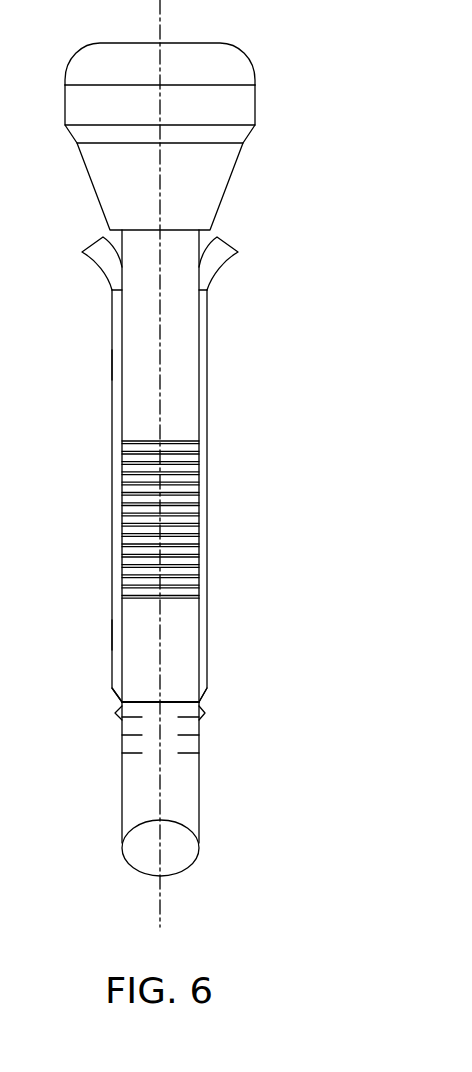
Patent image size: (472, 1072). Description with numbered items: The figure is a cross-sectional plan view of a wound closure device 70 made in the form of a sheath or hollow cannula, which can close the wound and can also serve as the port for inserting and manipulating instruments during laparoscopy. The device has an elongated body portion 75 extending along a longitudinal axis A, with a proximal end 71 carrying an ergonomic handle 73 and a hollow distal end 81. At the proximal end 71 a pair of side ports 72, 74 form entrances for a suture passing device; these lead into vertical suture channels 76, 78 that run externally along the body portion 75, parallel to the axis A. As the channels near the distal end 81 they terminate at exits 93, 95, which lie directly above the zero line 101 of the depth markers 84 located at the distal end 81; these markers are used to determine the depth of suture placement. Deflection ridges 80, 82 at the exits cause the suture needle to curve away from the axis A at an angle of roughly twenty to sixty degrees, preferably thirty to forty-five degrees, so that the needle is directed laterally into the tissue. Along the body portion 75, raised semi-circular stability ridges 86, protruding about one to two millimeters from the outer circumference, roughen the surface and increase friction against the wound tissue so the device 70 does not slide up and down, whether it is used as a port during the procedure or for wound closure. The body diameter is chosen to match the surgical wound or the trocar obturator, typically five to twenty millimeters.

The wound closure device 70 is at (200, 456).
The proximal end 71 is at (213, 182).
The side port 72 is at (217, 243).
The ergonomic handle 73 is at (73, 107).
The side port 74 is at (93, 243).
The elongated body portion 75 is at (178, 323).
The vertical suture channel 76 is at (208, 363).
The vertical suture channel 78 is at (112, 363).
The deflection ridge 80 is at (203, 712).
The hollow distal end 81 is at (198, 848).
The deflection ridge 82 is at (117, 712).
The depth markers 84 is at (202, 744).
The stability ridges 86 is at (192, 528).
The exit 93 is at (115, 692).
The exit 95 is at (203, 692).
The zero line 101 is at (178, 699).
The longitudinal axis A is at (160, 913).